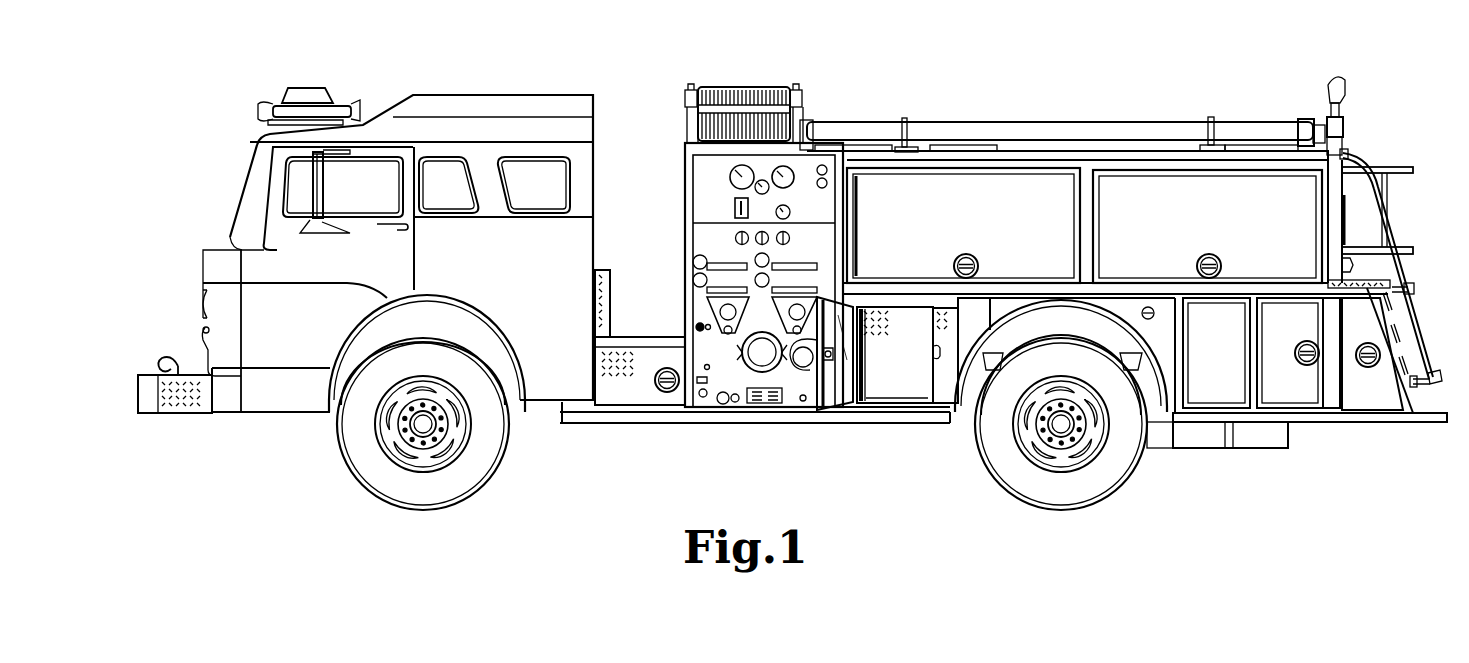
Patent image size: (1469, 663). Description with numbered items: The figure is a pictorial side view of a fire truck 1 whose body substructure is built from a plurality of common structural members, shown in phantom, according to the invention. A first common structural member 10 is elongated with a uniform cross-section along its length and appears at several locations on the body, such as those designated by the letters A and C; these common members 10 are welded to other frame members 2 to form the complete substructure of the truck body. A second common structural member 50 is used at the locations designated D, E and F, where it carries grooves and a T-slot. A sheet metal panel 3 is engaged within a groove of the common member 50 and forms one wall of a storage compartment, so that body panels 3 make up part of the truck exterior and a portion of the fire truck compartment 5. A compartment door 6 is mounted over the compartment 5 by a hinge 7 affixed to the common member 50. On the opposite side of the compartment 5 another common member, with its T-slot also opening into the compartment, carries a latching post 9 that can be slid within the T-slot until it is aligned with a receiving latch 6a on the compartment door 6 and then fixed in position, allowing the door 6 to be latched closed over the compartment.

The fire truck 1 is at (1017, 99).
The frame members 2 is at (1100, 222).
The sheet metal panel 3 is at (897, 351).
The compartment 5 is at (880, 383).
The compartment door 6 is at (840, 338).
The receiving latch 6a is at (830, 360).
The hinge 7 is at (863, 388).
The latching post 9 is at (938, 352).
The common structural member 10 is at (863, 185).
The common structural member 50 is at (905, 395).